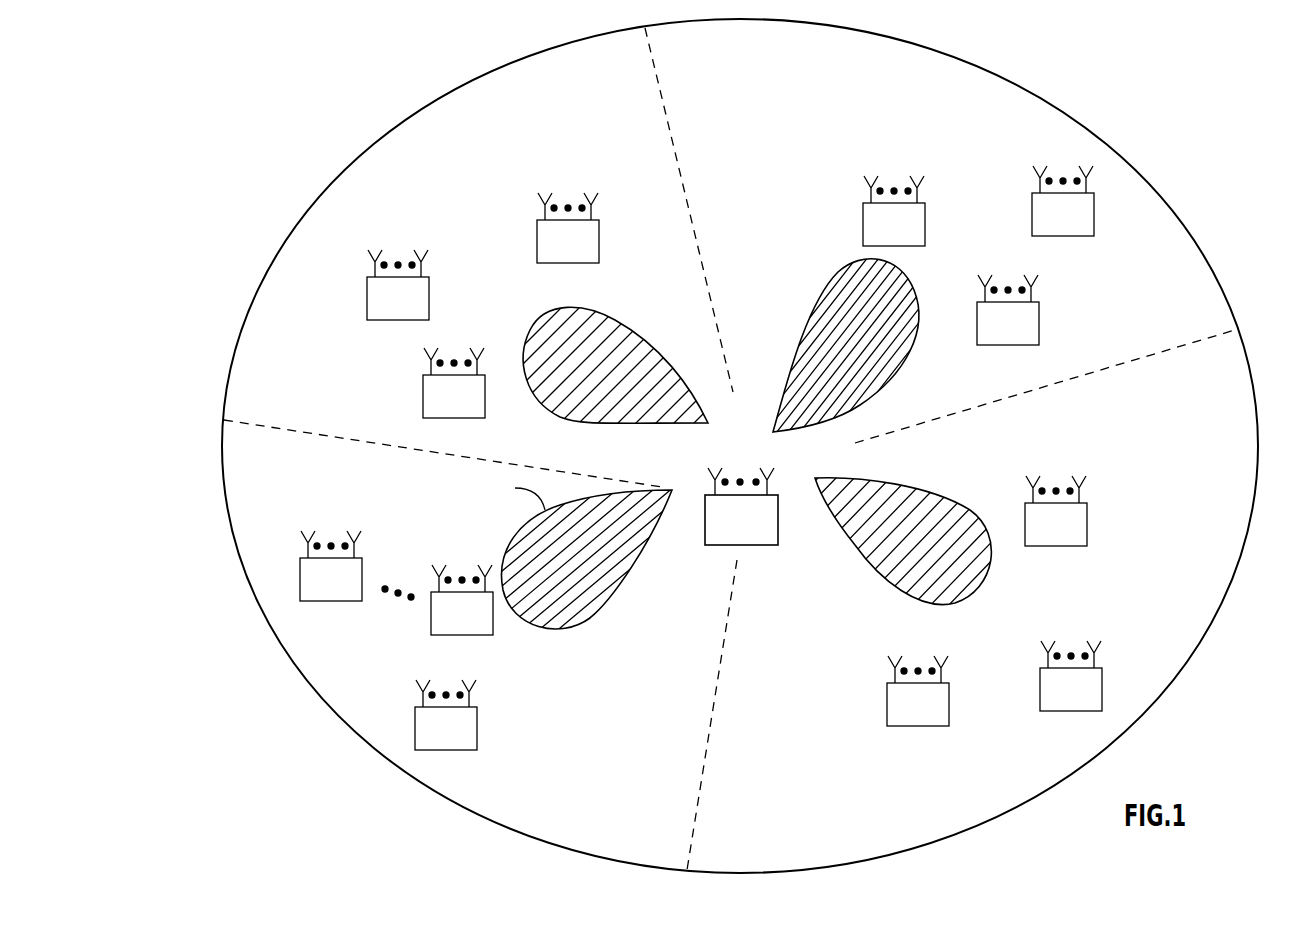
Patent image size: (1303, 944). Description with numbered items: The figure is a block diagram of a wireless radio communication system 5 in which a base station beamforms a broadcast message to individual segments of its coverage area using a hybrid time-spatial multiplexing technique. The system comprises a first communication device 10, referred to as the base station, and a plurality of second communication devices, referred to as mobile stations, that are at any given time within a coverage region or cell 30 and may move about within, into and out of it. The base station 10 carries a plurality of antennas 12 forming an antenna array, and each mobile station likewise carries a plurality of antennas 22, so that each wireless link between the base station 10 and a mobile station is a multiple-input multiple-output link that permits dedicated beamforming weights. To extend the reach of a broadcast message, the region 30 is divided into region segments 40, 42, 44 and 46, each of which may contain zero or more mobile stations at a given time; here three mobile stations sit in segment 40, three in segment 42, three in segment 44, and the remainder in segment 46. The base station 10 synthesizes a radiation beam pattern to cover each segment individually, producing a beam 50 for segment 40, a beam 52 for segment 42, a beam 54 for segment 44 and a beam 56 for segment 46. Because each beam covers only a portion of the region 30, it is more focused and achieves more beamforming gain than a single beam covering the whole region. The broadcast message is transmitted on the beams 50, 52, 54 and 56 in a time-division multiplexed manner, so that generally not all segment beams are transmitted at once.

The wireless radio communication system 5 is at (740, 450).
The first communication device 10 is at (742, 506).
The plurality of antennas 12 is at (775, 458).
The plurality of antennas 22 is at (489, 350).
The coverage region 30 is at (1092, 133).
The region segment 40 is at (645, 287).
The region segment 42 is at (751, 287).
The region segment 44 is at (791, 652).
The region segment 46 is at (645, 652).
The beam 50 is at (668, 357).
The beam 52 is at (785, 368).
The beam 54 is at (843, 540).
The beam 56 is at (655, 533).